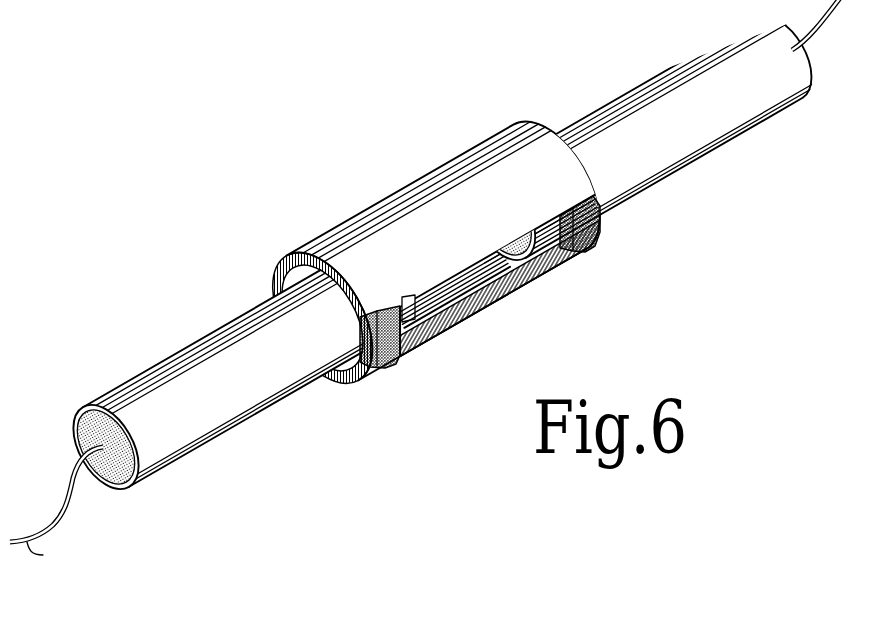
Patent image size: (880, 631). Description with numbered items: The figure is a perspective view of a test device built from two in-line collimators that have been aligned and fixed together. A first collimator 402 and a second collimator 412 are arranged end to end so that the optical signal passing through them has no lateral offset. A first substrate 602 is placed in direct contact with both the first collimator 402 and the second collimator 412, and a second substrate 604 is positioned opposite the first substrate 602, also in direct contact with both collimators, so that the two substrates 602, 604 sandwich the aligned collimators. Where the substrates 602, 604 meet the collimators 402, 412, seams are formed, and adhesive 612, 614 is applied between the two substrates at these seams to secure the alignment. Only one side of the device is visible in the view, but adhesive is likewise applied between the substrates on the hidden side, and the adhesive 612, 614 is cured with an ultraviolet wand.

The first collimator 402 is at (220, 322).
The second collimator 412 is at (745, 128).
The first substrate 602 is at (450, 162).
The second substrate 604 is at (492, 308).
The adhesive 612 is at (407, 346).
The adhesive 614 is at (600, 227).